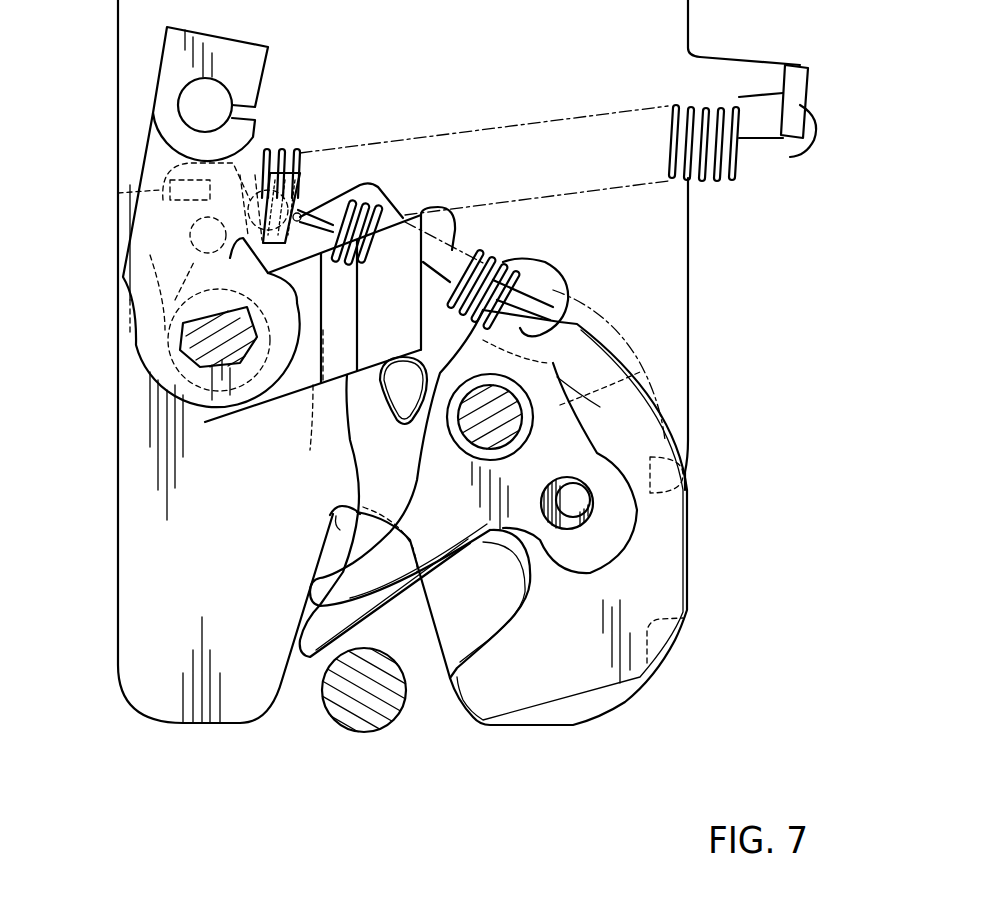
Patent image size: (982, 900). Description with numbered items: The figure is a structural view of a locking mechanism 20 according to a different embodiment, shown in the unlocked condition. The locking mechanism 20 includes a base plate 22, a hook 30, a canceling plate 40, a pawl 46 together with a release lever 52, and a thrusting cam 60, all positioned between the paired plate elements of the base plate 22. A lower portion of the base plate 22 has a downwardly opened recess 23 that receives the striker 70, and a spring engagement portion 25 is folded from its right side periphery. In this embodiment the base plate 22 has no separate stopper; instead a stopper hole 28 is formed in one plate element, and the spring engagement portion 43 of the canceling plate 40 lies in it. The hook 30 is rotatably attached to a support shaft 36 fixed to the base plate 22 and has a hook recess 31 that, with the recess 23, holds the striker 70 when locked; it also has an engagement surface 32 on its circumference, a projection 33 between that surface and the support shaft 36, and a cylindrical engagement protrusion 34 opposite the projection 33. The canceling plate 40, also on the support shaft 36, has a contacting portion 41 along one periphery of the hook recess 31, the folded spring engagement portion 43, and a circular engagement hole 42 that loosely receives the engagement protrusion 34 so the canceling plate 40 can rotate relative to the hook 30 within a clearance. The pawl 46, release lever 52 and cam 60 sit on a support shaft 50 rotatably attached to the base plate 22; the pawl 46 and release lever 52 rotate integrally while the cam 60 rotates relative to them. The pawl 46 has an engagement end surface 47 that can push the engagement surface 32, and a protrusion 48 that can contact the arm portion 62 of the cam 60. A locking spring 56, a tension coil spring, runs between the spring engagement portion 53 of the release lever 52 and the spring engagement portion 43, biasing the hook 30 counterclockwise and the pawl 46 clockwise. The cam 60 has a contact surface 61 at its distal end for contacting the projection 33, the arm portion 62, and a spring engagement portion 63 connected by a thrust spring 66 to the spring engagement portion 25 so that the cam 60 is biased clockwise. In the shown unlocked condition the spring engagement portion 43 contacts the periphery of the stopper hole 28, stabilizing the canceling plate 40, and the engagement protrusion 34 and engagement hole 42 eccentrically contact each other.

The locking mechanism 20 is at (93, 59).
The base plate 22 is at (135, 452).
The recess 23 is at (336, 516).
The spring engagement portion 25 is at (800, 78).
The stopper hole 28 is at (640, 372).
The hook 30 is at (650, 546).
The hook recess 31 is at (507, 555).
The engagement surface 32 is at (317, 340).
The projection 33 is at (392, 398).
The engagement protrusion 34 is at (580, 493).
The support shaft 36 is at (510, 407).
The canceling plate 40 is at (570, 447).
The contacting portion 41 is at (382, 572).
The engagement hole 42 is at (566, 530).
The spring engagement portion 43 is at (530, 307).
The pawl 46 is at (340, 203).
The engagement end surface 47 is at (414, 195).
The protrusion 48 is at (200, 255).
The support shaft 50 is at (205, 356).
The release lever 52 is at (153, 145).
The spring engagement portion 53 is at (300, 180).
The locking spring 56 is at (483, 250).
The thrusting cam 60 is at (287, 410).
The contact surface 61 is at (508, 262).
The arm portion 62 is at (150, 232).
The spring engagement portion 63 is at (150, 192).
The thrust spring 66 is at (670, 112).
The striker 70 is at (360, 692).